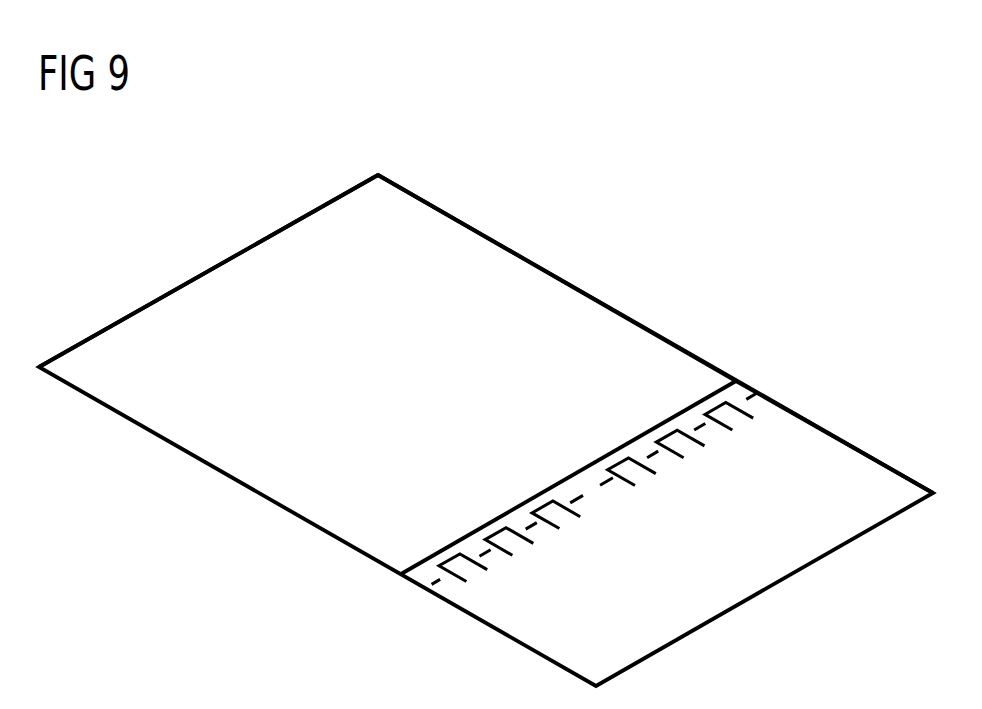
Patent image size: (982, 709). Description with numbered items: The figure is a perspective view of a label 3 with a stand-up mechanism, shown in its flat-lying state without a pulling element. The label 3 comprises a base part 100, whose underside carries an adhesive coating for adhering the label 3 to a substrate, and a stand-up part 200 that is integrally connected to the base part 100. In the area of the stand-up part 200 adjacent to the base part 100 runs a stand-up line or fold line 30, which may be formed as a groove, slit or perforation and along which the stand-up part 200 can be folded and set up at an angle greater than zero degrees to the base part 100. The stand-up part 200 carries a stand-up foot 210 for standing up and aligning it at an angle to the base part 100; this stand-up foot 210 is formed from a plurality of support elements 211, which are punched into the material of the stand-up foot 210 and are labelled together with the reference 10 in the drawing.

The label 3 is at (214, 201).
The base part 100 is at (528, 277).
The stand-up part 200 is at (790, 427).
The stand-up line/fold line 30 is at (702, 428).
The electronic component 10 is at (635, 492).
The stand-up foot 210 is at (635, 492).
The support elements/feet 211 is at (737, 418).